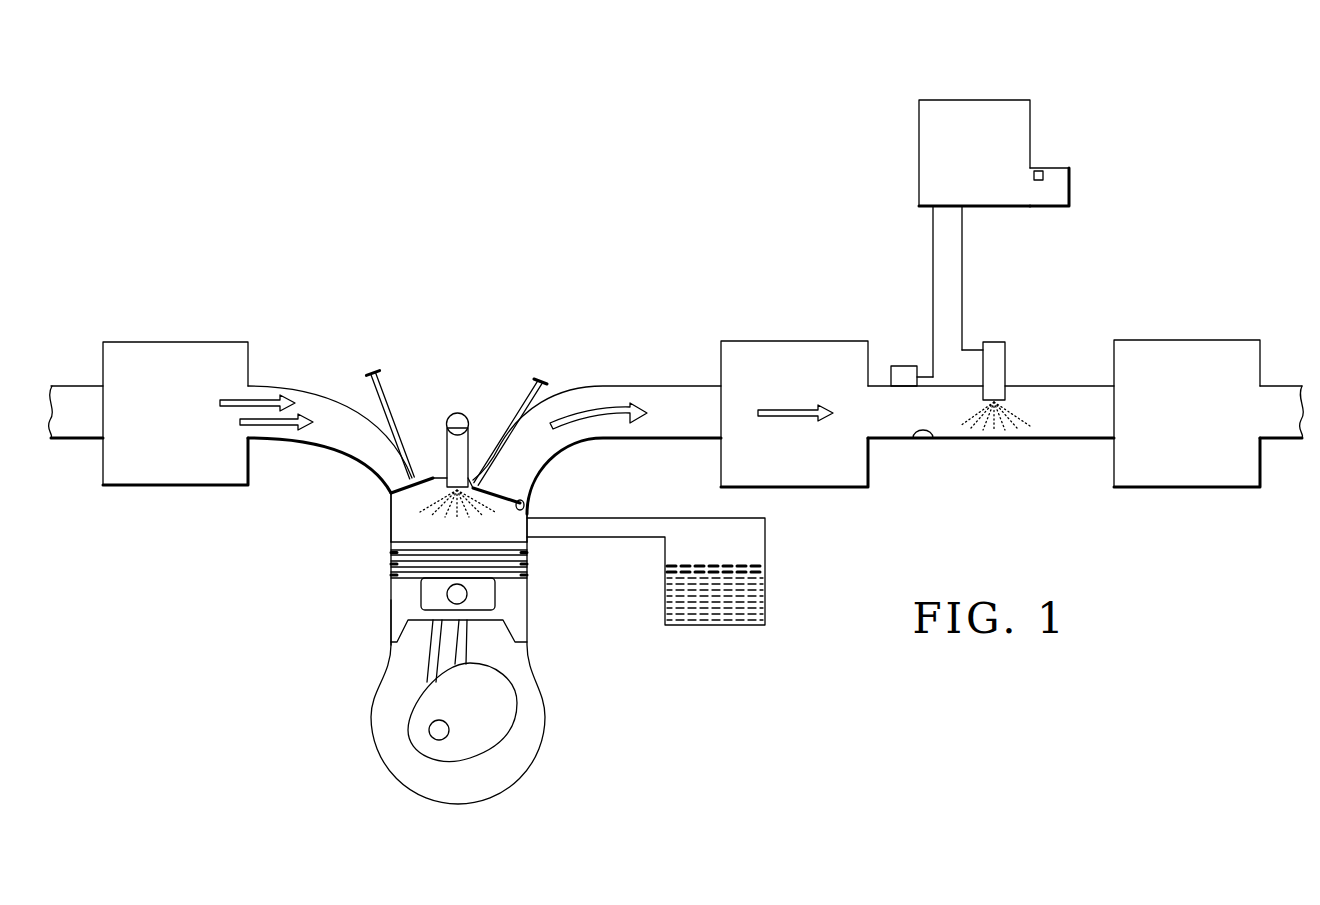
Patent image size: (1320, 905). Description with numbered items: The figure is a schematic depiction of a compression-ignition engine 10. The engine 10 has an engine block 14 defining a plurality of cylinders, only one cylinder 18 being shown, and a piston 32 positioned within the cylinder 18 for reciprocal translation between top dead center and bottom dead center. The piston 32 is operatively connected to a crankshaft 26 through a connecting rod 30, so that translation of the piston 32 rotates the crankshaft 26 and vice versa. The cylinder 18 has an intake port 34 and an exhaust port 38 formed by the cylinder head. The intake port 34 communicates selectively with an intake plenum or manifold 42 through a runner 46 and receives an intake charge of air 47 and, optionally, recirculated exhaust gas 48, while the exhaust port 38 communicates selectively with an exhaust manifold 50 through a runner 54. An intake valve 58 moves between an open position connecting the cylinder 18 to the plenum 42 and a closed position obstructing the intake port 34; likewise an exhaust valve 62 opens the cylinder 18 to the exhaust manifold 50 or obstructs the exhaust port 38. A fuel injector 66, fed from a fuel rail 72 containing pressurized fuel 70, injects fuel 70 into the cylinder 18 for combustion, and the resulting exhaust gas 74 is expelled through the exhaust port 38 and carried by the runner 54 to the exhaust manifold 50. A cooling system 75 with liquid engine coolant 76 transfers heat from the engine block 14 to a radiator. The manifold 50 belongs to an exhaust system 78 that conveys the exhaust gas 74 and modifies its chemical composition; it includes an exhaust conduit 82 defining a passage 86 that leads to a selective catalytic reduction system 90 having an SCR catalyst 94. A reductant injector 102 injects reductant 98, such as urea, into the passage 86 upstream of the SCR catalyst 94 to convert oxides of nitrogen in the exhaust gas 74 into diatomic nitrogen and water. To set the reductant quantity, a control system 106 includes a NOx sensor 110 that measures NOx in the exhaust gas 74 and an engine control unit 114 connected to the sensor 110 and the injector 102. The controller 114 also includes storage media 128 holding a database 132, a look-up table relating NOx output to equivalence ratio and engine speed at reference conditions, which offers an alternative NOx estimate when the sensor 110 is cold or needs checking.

The compression-ignition engine 10 is at (484, 511).
The engine block 14 is at (527, 626).
The cylinder 18 is at (391, 612).
The crankshaft 26 is at (483, 707).
The connecting rod 30 is at (430, 652).
The piston 32 is at (513, 589).
The intake port 34 is at (391, 504).
The exhaust port 38 is at (525, 492).
The intake plenum or manifold 42 is at (175, 342).
The runner 46 is at (308, 386).
The air 47 is at (260, 426).
The recirculated exhaust gas 48 is at (233, 400).
The exhaust manifold 50 is at (794, 341).
The runner 54 is at (617, 386).
The intake valve 58 is at (380, 384).
The exhaust valve 62 is at (537, 384).
The fuel injector 66 is at (463, 416).
The fuel 70 is at (452, 519).
The fuel rail 72 is at (458, 413).
The exhaust gas 74 is at (590, 420).
The cooling system 75 is at (696, 602).
The liquid engine coolant 76 is at (733, 593).
The exhaust system 78 is at (1026, 492).
The exhaust conduit 82 is at (1064, 438).
The passage 86 is at (913, 438).
The selective catalytic reduction system 90 is at (1208, 406).
The SCR catalyst 94 is at (1188, 340).
The reductant 98 is at (1036, 409).
The reductant injector 102 is at (1005, 352).
The control system 106 is at (1002, 207).
The NOx sensor 110 is at (905, 366).
The engine control unit 114 is at (919, 155).
The storage media 128 is at (1069, 188).
The database 132 is at (1044, 176).